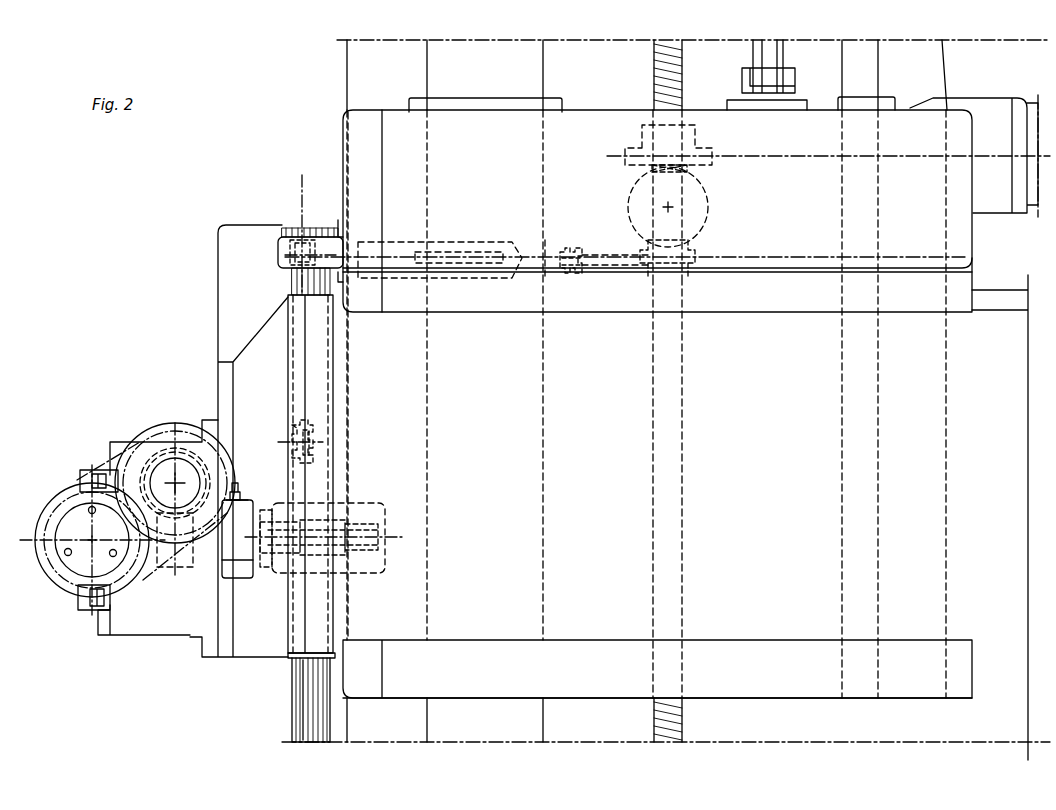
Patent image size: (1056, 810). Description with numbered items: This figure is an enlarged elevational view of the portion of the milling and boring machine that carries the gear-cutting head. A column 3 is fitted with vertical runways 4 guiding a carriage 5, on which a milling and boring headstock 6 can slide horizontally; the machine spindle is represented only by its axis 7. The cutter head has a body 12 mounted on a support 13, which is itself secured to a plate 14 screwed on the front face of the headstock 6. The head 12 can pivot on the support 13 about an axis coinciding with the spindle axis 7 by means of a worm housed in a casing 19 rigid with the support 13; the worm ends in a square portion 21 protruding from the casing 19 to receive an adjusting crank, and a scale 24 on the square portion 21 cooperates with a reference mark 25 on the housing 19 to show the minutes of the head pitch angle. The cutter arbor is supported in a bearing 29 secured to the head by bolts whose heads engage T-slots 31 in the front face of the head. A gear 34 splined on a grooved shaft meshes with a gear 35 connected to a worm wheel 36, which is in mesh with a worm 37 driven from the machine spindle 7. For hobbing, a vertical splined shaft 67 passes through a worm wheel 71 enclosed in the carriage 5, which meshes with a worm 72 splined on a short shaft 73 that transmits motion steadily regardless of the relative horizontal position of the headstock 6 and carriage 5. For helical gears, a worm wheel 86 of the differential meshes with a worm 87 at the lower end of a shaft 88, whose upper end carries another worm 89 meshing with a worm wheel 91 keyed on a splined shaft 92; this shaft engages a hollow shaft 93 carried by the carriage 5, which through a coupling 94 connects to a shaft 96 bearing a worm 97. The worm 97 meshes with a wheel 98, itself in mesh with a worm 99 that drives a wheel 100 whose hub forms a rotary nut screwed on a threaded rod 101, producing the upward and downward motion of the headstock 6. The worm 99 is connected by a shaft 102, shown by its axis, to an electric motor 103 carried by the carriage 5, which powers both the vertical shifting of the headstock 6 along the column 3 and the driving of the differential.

The column 3 is at (940, 723).
The vertical runways 4 is at (450, 73).
The carriage 5 is at (965, 279).
The milling and boring headstock 6 is at (1010, 330).
The machine spindle axis 7 is at (398, 539).
The body of the cutter head 12 is at (122, 452).
The support 13 is at (248, 645).
The plate 14 is at (318, 635).
The casing 19 is at (247, 580).
The square portion 21 is at (240, 492).
The scale 24 is at (248, 499).
The reference mark 25 is at (236, 505).
The bearing 29 is at (78, 581).
The T-slots 31 is at (98, 470).
The gear 34 is at (48, 513).
The gear 35 is at (165, 435).
The worm wheel 36 is at (182, 455).
The worm 37 is at (175, 568).
The vertical splined shaft 67 is at (298, 714).
The worm wheel 71 is at (337, 527).
The worm 72 is at (312, 503).
The short shaft 73 is at (266, 509).
The worm wheel 86 is at (311, 425).
The worm 87 is at (322, 441).
The shaft 88 is at (303, 207).
The worm 89 is at (277, 253).
The worm wheel 91 is at (288, 242).
The shaft 92 is at (350, 258).
The hollow shaft 93 is at (396, 242).
The coupling 94 is at (575, 239).
The shaft 96 is at (604, 256).
The worm 97 is at (692, 252).
The wheel 98 is at (708, 213).
The worm 99 is at (690, 170).
The wheel 100 is at (700, 160).
The threaded rod 101 is at (652, 70).
The shaft 102 is at (779, 159).
The electric motor 103 is at (982, 102).